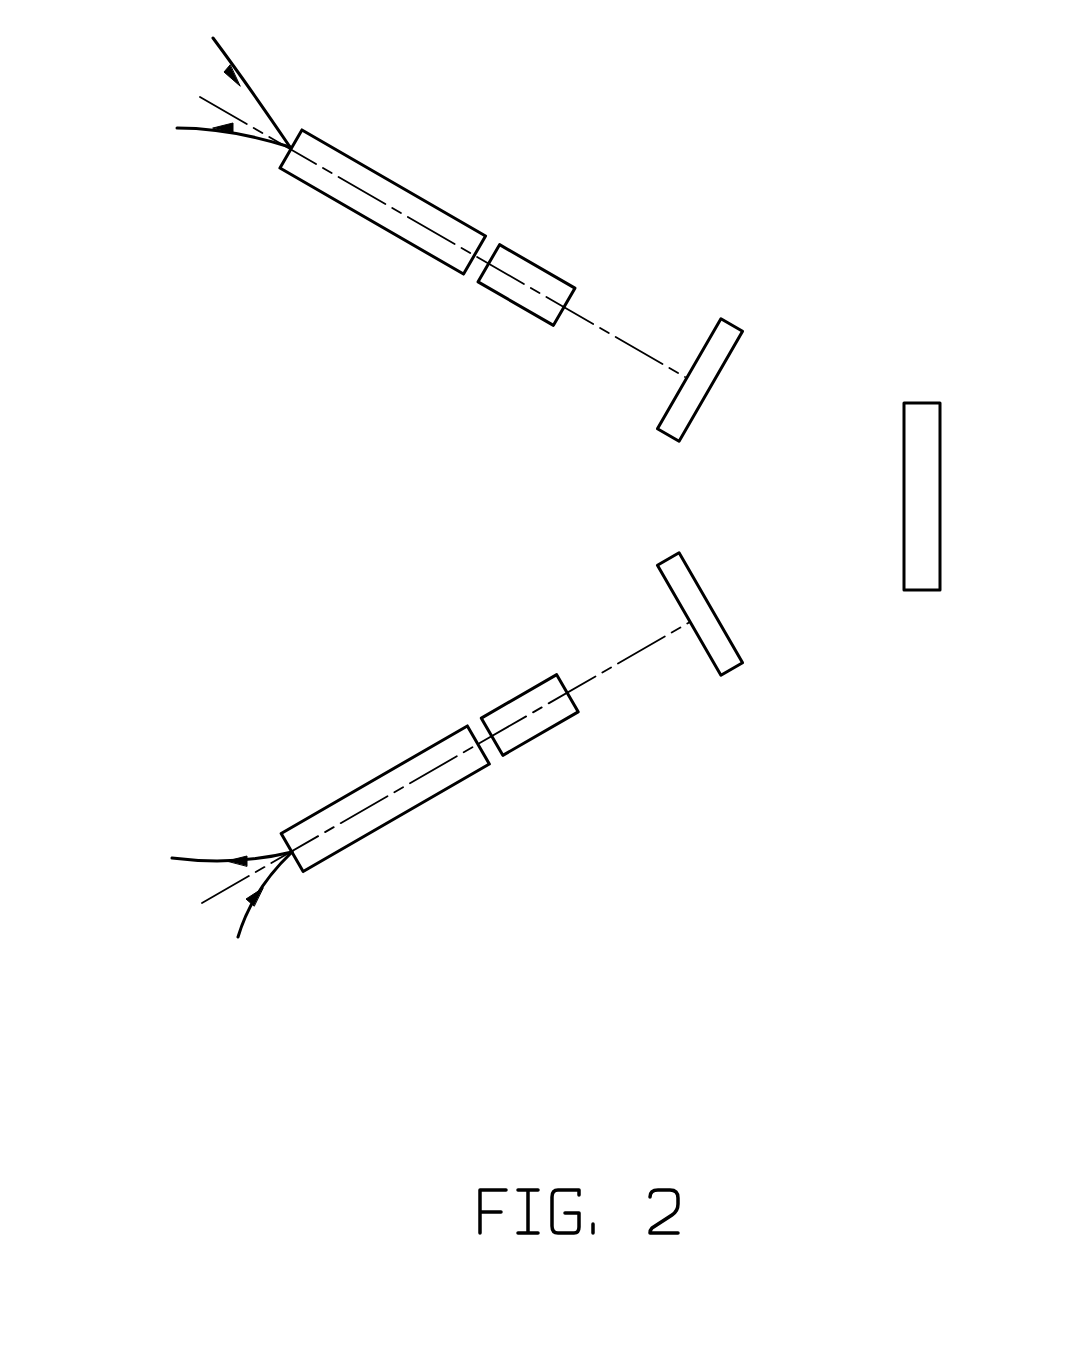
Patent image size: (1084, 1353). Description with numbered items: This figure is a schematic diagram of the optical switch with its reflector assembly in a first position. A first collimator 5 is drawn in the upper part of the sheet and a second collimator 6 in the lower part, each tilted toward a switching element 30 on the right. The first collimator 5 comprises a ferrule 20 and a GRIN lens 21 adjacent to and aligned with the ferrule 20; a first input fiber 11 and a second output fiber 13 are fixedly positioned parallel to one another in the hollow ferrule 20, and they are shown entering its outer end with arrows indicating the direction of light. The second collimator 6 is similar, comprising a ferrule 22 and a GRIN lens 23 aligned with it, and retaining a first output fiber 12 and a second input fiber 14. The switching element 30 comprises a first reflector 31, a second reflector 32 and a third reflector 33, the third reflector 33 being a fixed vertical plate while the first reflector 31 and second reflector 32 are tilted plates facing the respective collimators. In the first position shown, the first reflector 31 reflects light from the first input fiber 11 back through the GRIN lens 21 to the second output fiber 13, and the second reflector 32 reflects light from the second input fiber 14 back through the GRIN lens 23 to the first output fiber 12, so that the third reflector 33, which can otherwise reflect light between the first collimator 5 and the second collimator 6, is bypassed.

The first collimator 5 is at (400, 60).
The second collimator 6 is at (600, 815).
The first input fiber 11 is at (224, 54).
The first output fiber 12 is at (190, 857).
The second output fiber 13 is at (192, 127).
The second input fiber 14 is at (243, 915).
The ferrule 20 is at (390, 192).
The GRIN lens 21 is at (535, 275).
The ferrule 22 is at (413, 793).
The GRIN lens 23 is at (535, 723).
The switching element 30 is at (740, 237).
The first reflector 31 is at (720, 345).
The second reflector 32 is at (715, 645).
The third reflector 33 is at (923, 440).